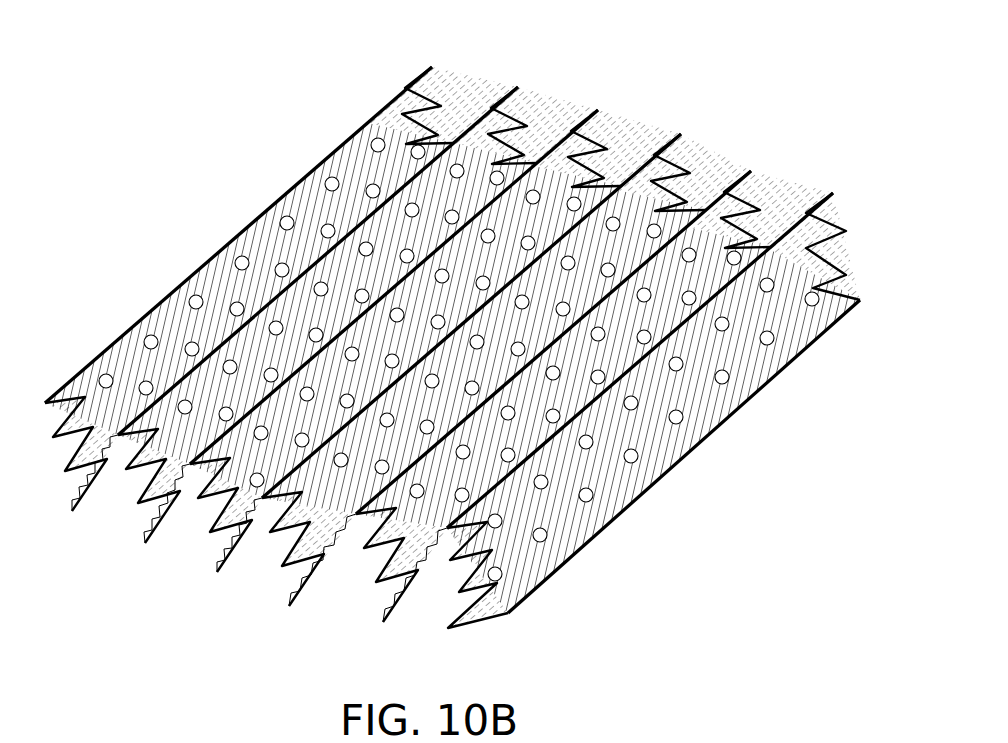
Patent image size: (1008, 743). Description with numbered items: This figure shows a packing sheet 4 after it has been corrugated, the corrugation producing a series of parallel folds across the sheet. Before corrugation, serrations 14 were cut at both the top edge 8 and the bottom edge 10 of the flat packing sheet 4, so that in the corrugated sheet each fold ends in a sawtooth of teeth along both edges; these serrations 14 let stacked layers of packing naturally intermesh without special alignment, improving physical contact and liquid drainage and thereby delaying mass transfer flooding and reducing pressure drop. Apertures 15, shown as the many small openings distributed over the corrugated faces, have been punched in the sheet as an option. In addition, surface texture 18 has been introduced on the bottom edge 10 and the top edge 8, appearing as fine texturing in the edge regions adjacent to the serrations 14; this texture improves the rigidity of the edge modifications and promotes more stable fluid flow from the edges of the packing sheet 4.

The packing sheet 4 is at (668, 476).
The top edge 8 is at (829, 322).
The bottom edge 10 is at (458, 350).
The serrations 14 is at (838, 237).
The apertures 15 is at (285, 216).
The surface texture 18 is at (413, 96).